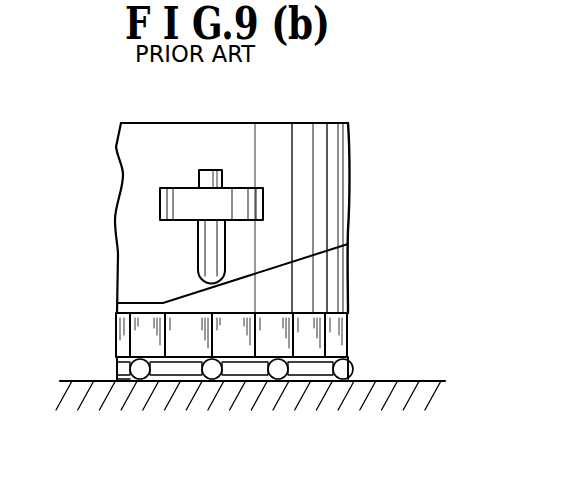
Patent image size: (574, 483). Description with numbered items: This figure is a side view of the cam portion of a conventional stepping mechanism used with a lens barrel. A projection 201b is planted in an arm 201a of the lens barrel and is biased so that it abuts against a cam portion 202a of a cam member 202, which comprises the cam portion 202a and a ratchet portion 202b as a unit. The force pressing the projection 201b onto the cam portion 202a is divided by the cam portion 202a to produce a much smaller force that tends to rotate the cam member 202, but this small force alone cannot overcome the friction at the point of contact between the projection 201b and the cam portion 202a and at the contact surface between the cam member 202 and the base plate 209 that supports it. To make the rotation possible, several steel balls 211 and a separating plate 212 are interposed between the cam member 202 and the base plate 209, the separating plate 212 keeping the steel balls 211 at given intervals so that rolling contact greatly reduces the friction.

The arm 201a is at (240, 188).
The projection 201b is at (198, 252).
The cam member 202 is at (329, 278).
The cam portion 202a is at (322, 243).
The ratchet portion 202b is at (320, 331).
The base plate 209 is at (432, 385).
The steel balls 211 is at (139, 381).
The separating plate 212 is at (240, 376).